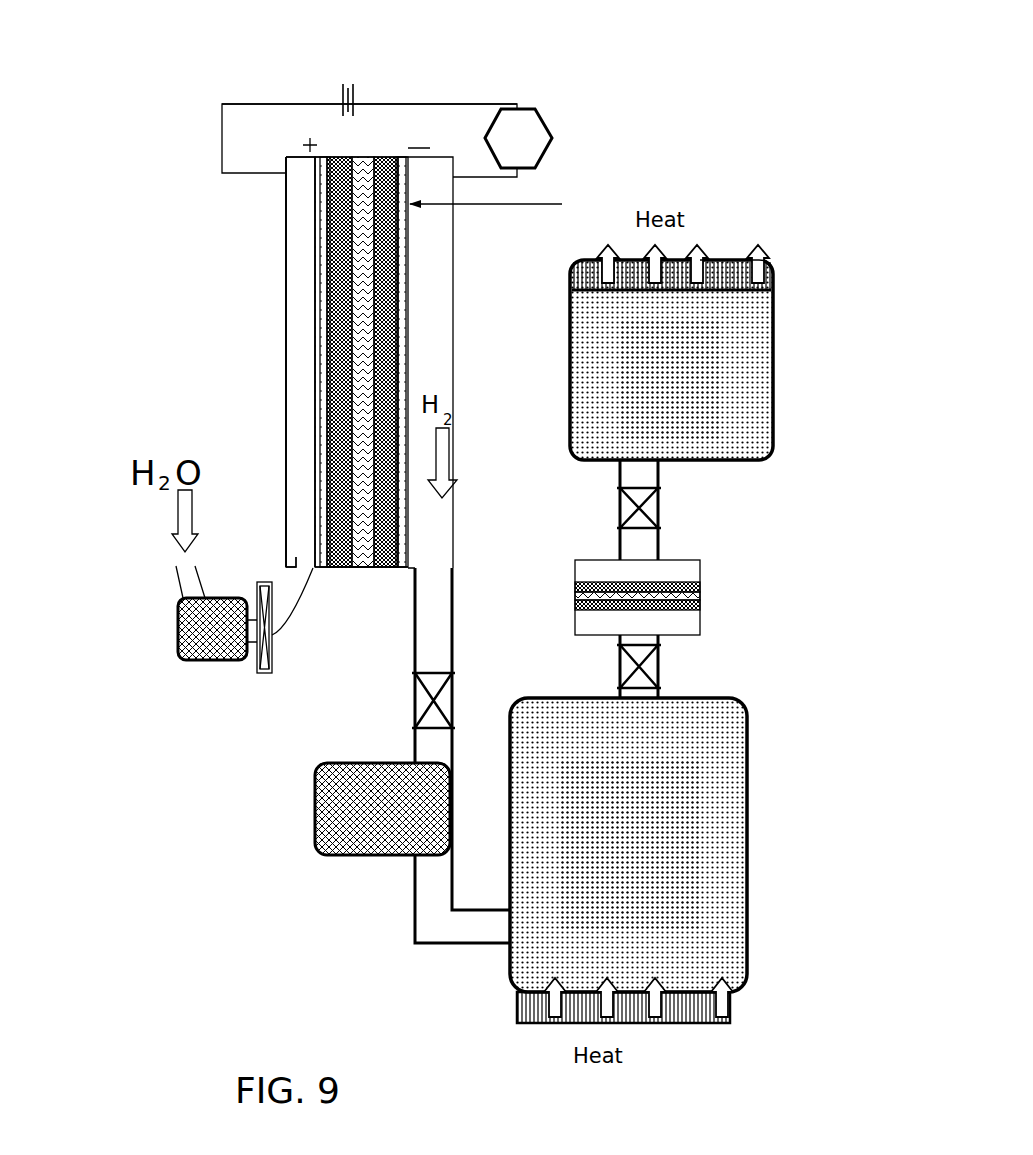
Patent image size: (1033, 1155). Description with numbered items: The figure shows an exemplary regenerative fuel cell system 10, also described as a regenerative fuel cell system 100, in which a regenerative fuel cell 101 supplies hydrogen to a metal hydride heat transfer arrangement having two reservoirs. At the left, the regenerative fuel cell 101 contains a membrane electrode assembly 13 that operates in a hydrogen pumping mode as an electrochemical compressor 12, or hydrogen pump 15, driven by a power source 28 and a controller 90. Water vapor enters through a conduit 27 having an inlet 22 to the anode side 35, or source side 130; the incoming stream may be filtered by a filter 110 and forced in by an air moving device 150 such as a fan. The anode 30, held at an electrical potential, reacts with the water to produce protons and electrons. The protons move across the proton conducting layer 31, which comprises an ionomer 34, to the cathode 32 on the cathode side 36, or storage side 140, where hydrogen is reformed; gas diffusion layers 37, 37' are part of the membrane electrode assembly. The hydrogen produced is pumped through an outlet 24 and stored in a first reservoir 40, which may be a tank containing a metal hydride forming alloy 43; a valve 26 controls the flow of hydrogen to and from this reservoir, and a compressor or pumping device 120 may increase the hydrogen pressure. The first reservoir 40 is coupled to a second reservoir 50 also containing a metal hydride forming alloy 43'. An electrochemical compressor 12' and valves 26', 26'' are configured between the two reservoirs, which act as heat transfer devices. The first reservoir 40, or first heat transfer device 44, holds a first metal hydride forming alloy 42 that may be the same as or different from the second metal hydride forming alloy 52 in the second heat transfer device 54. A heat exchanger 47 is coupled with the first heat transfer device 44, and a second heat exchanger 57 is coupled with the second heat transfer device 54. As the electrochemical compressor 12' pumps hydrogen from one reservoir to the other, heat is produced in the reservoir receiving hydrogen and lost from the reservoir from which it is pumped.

The regenerative fuel cell system 10 is at (772, 268).
The electrochemical compressor 12 is at (275, 303).
The electrochemical compressor 12' is at (691, 594).
The membrane electrode assembly 13 is at (320, 417).
The hydrogen pump 15 is at (303, 188).
The inlet 22 is at (296, 560).
The outlet 24 is at (436, 573).
The valve 26 is at (474, 685).
The valve 26' is at (687, 666).
The valve 26'' is at (694, 508).
The conduit 27 is at (185, 573).
The power source 28 is at (388, 103).
The anode 30 is at (327, 348).
The proton conducting layer 31 is at (352, 568).
The cathode 32 is at (403, 358).
The ionomer 34 is at (367, 568).
The anode side 35 is at (330, 311).
The cathode side 36 is at (403, 292).
The gas diffusion layer 37 is at (258, 362).
The gas diffusion layer 37' is at (475, 362).
The first reservoir 40 is at (747, 795).
The first metal hydride forming alloy 42 is at (747, 888).
The metal hydride forming alloy 43 is at (724, 464).
The metal hydride forming alloy 43' is at (685, 969).
The first heat transfer device 44 is at (747, 742).
The heat exchanger 47 is at (687, 1023).
The second reservoir 50 is at (740, 363).
The second metal hydride forming alloy 52 is at (740, 410).
The second heat transfer device 54 is at (745, 295).
The second heat exchanger 57 is at (725, 266).
The controller 90 is at (514, 128).
The regenerative fuel cell system 100 is at (241, 90).
The regenerative fuel cell 101 is at (309, 242).
The filter 110 is at (178, 637).
The compressor or pumping device 120 is at (316, 838).
The source side 130 is at (300, 263).
The storage side 140 is at (518, 206).
The air moving device 150 is at (265, 675).